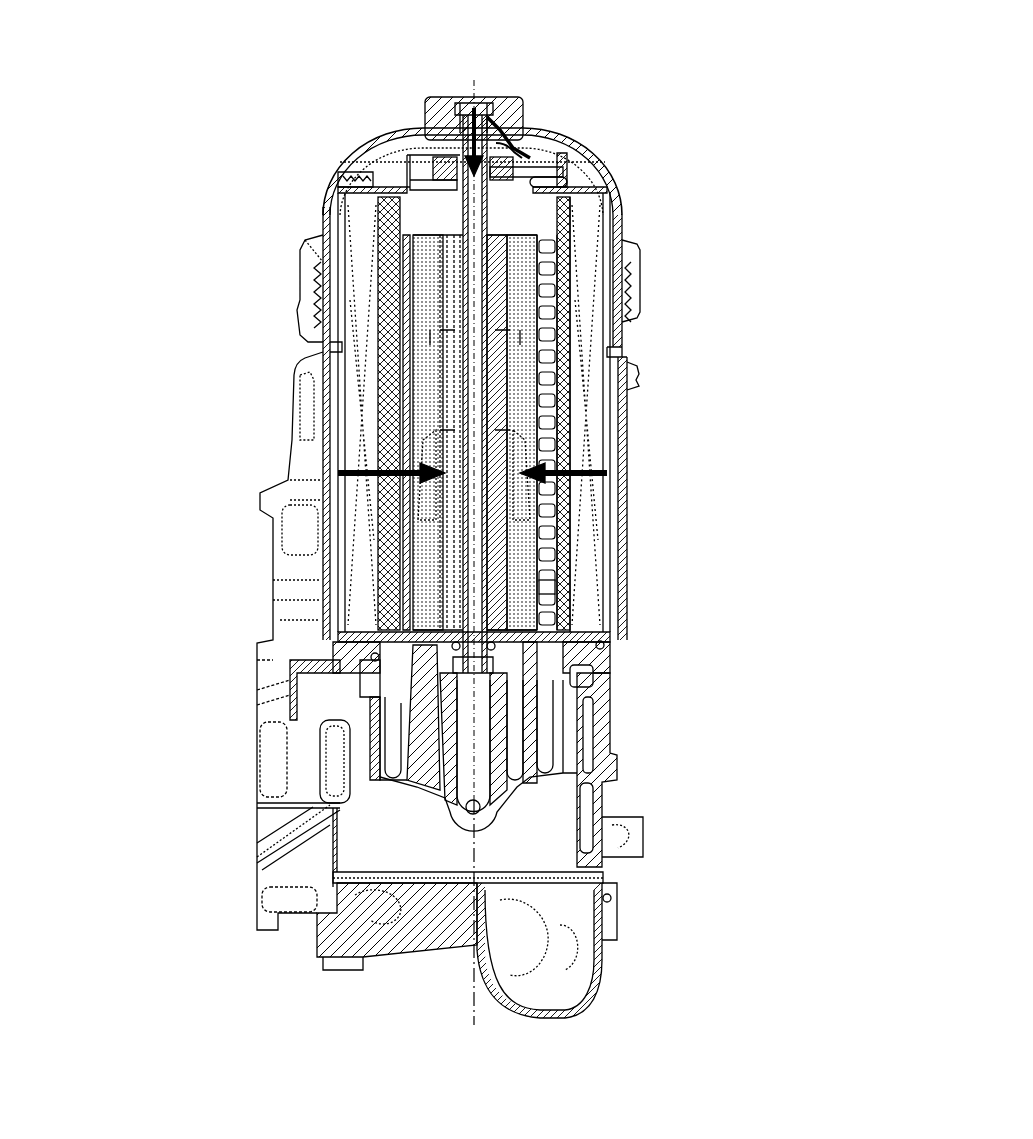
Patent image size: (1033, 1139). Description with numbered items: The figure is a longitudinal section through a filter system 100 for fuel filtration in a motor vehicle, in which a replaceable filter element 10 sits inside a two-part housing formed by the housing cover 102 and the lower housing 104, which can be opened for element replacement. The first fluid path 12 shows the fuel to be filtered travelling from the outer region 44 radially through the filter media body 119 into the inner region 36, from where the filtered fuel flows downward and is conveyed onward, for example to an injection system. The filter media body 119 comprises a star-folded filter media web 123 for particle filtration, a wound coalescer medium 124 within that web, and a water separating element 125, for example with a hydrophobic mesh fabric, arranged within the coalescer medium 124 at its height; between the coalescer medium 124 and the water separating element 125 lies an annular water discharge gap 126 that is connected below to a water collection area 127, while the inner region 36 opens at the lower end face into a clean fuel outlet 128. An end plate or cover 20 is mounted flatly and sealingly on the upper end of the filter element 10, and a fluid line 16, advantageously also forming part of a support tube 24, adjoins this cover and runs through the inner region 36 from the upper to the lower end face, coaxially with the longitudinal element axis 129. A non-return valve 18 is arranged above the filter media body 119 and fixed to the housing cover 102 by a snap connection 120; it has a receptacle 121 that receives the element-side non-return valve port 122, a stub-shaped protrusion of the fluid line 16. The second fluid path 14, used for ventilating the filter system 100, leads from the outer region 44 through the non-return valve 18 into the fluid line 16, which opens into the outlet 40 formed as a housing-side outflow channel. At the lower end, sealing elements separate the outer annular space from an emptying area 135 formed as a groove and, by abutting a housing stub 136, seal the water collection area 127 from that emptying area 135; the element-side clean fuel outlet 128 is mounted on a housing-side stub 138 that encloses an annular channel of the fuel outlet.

The filter system 100 is at (150, 138).
The filter element 10 is at (322, 212).
The first fluid path 12 is at (638, 474).
The second fluid path 14 is at (500, 152).
The fluid line 16 is at (476, 265).
The non-return valve 18 is at (457, 153).
The end plate or cover 20 is at (366, 186).
The support tube 24 is at (462, 304).
The inner region 36 is at (506, 448).
The outlet 40 is at (468, 752).
The outer region 44 is at (606, 230).
The housing cover 102 is at (625, 188).
The housing 104 is at (612, 668).
The filter media body 119 is at (594, 306).
The snap connection 120 is at (479, 107).
The receptacle 121 is at (458, 161).
The non-return valve port 122 is at (485, 160).
The star-folded filter media web 123 is at (588, 502).
The wound coalescer medium 124 is at (563, 533).
The water separating element 125 is at (534, 571).
The annular water discharge gap 126 is at (545, 588).
The water collection area 127 is at (434, 858).
The clean fuel outlet 128 is at (432, 631).
The longitudinal element axis 129 is at (470, 982).
The emptying area 135 is at (360, 672).
The housing stub 136 is at (416, 702).
The housing-side stub 138 is at (378, 683).